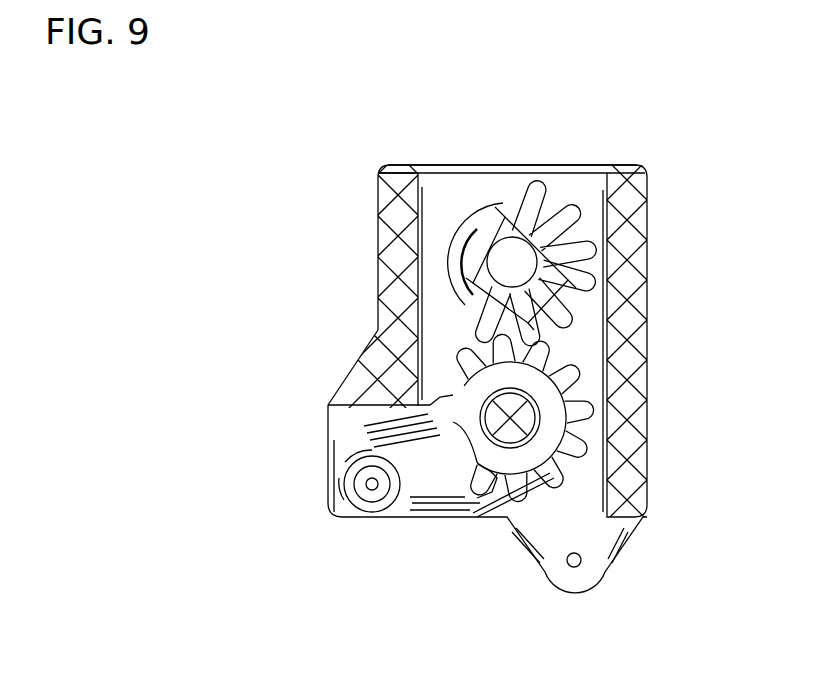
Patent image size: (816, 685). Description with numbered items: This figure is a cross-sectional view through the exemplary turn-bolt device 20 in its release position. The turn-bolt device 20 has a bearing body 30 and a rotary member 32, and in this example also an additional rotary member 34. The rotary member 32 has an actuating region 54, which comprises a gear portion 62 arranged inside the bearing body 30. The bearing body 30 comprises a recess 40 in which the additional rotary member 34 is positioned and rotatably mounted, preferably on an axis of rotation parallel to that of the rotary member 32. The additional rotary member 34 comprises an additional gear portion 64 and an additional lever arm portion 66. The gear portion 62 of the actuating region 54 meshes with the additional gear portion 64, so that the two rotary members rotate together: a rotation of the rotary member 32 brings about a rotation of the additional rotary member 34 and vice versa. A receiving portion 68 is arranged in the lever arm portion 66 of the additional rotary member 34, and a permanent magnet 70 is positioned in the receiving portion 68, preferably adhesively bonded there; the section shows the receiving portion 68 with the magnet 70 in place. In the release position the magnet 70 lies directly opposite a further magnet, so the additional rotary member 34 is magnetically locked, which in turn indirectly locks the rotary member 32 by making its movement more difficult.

The turn-bolt device 20 is at (488, 82).
The bearing body 30 is at (377, 238).
The rotary member 32 is at (451, 198).
The additional rotary member 34 is at (409, 542).
The recess 40 is at (437, 368).
The actuating region 54 is at (570, 184).
The gear portion 62 is at (588, 257).
The additional gear portion 64 is at (597, 455).
The additional lever arm portion 66 is at (337, 463).
The receiving portion 68 is at (352, 490).
The magnet 70 is at (371, 465).